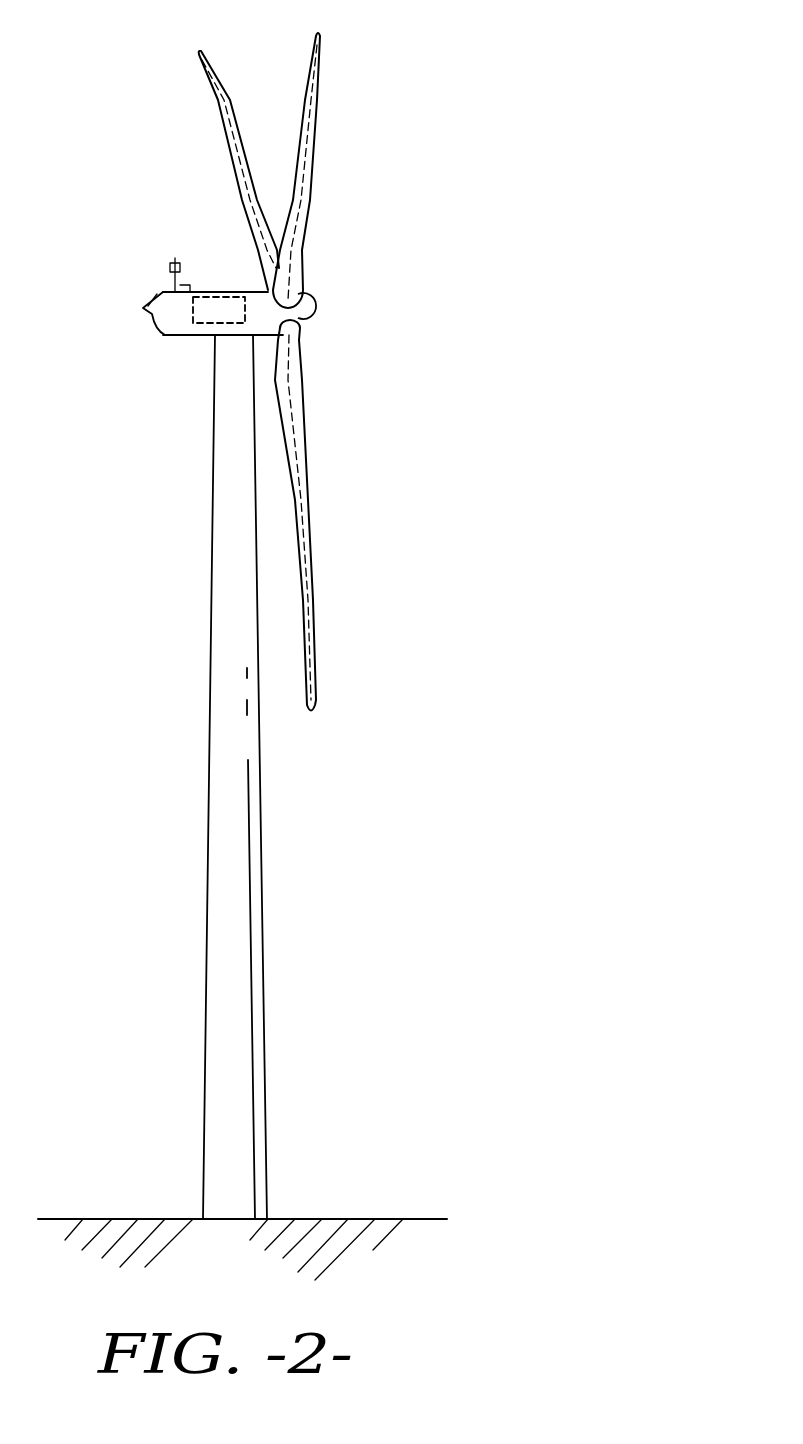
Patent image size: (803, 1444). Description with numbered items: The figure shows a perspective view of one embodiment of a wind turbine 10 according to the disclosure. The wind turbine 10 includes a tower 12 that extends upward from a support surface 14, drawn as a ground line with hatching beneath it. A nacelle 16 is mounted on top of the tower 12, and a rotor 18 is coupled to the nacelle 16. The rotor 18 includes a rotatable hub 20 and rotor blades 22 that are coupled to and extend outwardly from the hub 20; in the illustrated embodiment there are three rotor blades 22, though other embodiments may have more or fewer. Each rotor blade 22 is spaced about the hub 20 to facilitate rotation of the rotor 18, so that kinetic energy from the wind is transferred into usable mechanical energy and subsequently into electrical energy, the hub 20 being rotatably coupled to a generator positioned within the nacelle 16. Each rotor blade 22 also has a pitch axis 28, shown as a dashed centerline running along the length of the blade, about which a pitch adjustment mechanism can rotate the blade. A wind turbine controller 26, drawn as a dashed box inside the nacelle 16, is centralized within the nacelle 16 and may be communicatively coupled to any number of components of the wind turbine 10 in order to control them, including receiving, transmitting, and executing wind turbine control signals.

The wind turbine 10 is at (448, 113).
The tower 12 is at (218, 898).
The support surface 14 is at (127, 1219).
The nacelle 16 is at (188, 337).
The rotor 18 is at (324, 276).
The rotatable hub 20 is at (315, 313).
The rotor blade 22 is at (305, 77).
The wind turbine controller 26 is at (222, 296).
The pitch axis 28 is at (242, 212).